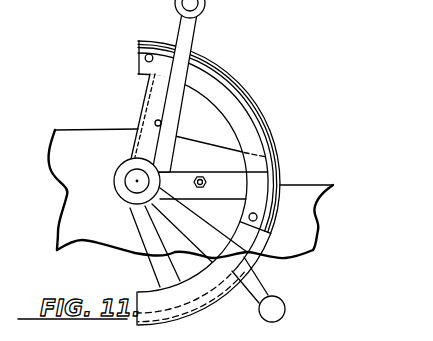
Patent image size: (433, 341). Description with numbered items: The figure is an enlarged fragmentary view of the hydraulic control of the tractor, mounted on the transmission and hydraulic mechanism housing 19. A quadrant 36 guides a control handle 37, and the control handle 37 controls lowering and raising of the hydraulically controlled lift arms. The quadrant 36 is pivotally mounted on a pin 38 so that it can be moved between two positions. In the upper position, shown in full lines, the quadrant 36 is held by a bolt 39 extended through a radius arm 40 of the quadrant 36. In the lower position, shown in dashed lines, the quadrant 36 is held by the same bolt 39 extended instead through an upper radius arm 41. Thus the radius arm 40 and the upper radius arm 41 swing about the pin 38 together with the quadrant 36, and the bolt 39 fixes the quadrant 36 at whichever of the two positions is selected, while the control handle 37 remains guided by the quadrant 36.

The transmission and hydraulic mechanism housing 19 is at (82, 241).
The quadrant 36 is at (229, 68).
The control handle 37 is at (183, 33).
The pin 38 is at (128, 186).
The bolt 39 is at (203, 176).
The radius arm 40 is at (270, 181).
The upper radius arm 41 is at (157, 134).